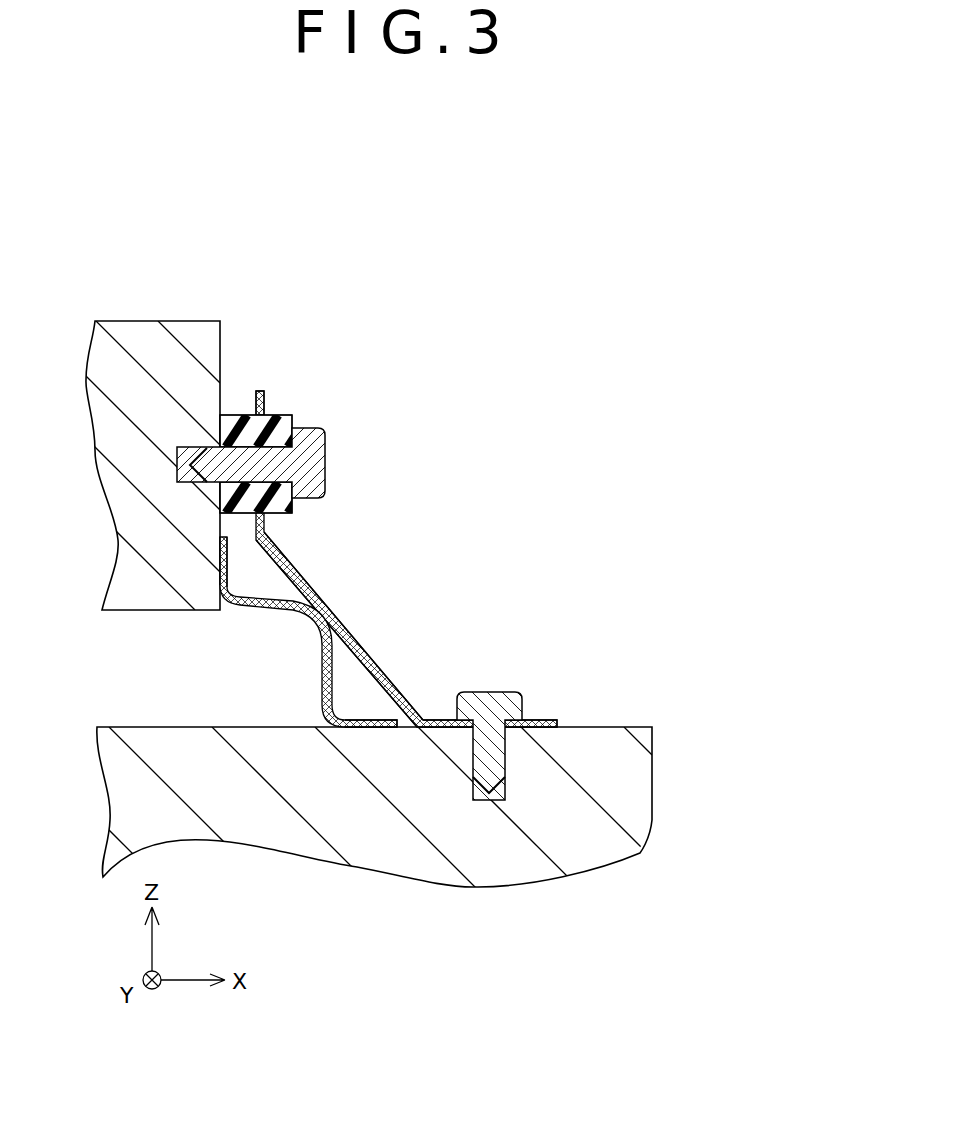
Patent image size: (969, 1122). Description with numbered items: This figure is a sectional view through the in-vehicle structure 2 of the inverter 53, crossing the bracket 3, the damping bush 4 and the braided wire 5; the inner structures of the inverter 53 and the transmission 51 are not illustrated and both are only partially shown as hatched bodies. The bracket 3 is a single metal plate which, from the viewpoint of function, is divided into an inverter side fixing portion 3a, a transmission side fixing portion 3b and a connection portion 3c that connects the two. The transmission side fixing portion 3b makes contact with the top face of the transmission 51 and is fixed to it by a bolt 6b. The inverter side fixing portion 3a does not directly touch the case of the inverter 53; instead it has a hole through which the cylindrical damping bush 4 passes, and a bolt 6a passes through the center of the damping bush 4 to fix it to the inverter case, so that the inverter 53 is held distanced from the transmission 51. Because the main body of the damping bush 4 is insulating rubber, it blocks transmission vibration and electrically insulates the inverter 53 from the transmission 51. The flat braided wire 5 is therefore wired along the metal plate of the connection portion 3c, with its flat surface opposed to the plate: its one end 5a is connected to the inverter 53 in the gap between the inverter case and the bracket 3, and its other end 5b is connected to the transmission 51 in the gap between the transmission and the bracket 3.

The in-vehicle structure 2 is at (527, 402).
The bracket 3 is at (397, 530).
The inverter side fixing portion 3a is at (260, 388).
The transmission side fixing portion 3b is at (447, 718).
The connection portion 3c is at (340, 623).
The damping bush 4 is at (278, 422).
The braided wire 5 is at (320, 632).
The one end of braided wire 5a is at (228, 562).
The other end of braided wire 5b is at (378, 717).
The bolt 6a is at (326, 450).
The bolt 6b is at (506, 690).
The transmission 51 is at (594, 733).
The inverter 53 is at (195, 332).